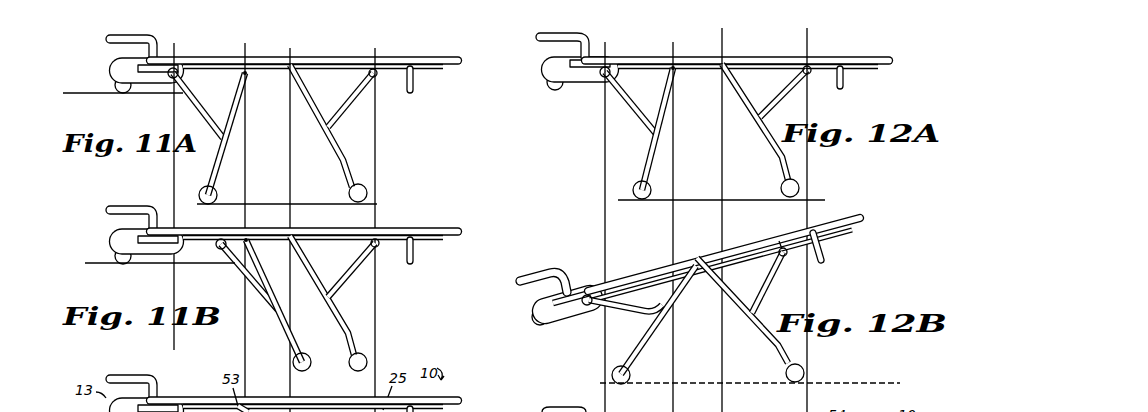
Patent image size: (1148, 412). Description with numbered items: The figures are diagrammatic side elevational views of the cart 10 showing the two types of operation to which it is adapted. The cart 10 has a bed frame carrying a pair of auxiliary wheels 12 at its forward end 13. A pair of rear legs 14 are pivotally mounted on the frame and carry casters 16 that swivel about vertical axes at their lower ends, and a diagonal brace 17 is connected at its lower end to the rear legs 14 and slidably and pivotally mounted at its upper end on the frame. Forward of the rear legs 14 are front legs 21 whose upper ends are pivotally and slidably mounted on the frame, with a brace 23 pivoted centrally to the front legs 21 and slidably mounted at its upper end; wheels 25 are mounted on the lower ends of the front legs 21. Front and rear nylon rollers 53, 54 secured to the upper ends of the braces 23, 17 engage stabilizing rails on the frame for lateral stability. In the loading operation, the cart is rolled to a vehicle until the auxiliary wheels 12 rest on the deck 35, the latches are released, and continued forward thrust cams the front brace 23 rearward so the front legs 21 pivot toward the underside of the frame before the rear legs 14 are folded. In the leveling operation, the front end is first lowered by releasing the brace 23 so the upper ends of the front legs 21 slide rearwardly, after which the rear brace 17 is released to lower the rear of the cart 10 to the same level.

In FIG. 11A, the cart 10 is at (320, 40).
In FIG. 11B, the cart 10 is at (444, 205).
In FIG. 12A, the cart 10 is at (895, 42).
In FIG. 12B, the cart 10 is at (857, 246).
In FIG. 11A, the auxiliary wheels 12 is at (128, 96).
In FIG. 11B, the auxiliary wheels 12 is at (121, 268).
In FIG. 12A, the auxiliary wheels 12 is at (554, 95).
In FIG. 11A, the forward end 13 is at (103, 75).
In FIG. 11B, the forward end 13 is at (103, 246).
In FIG. 12A, the forward end 13 is at (536, 73).
In FIG. 12B, the forward end 13 is at (541, 307).
In FIG. 11A, the rear legs 14 is at (348, 157).
In FIG. 11B, the rear legs 14 is at (341, 308).
In FIG. 12A, the rear legs 14 is at (752, 107).
In FIG. 12B, the rear legs 14 is at (735, 301).
In FIG. 11A, the casters 16 is at (368, 191).
In FIG. 12A, the casters 16 is at (800, 190).
In FIG. 11A, the diagonal brace 17 is at (347, 110).
In FIG. 11B, the diagonal brace 17 is at (352, 271).
In FIG. 12A, the diagonal brace 17 is at (798, 70).
In FIG. 12B, the diagonal brace 17 is at (771, 279).
In FIG. 11A, the front legs 21 is at (220, 160).
In FIG. 11B, the front legs 21 is at (288, 331).
In FIG. 12A, the front legs 21 is at (655, 153).
In FIG. 12B, the front legs 21 is at (645, 337).
In FIG. 11A, the brace 23 is at (197, 110).
In FIG. 11B, the brace 23 is at (256, 273).
In FIG. 12A, the brace 23 is at (631, 109).
In FIG. 12B, the brace 23 is at (655, 308).
In FIG. 11A, the wheels 25 is at (199, 196).
In FIG. 11B, the wheels 25 is at (308, 368).
In FIG. 12A, the wheels 25 is at (633, 186).
In FIG. 12B, the wheels 25 is at (612, 374).
In FIG. 11A, the deck 35 is at (123, 104).
In FIG. 11B, the deck 35 is at (160, 274).
In FIG. 11A, the front nylon roller 53 is at (176, 68).
In FIG. 11B, the front nylon roller 53 is at (212, 240).
In FIG. 12A, the front nylon roller 53 is at (603, 78).
In FIG. 12B, the front nylon roller 53 is at (579, 308).
In FIG. 11A, the rear nylon roller 54 is at (379, 75).
In FIG. 11B, the rear nylon roller 54 is at (380, 245).
In FIG. 12A, the rear nylon roller 54 is at (811, 66).
In FIG. 12B, the rear nylon roller 54 is at (776, 251).